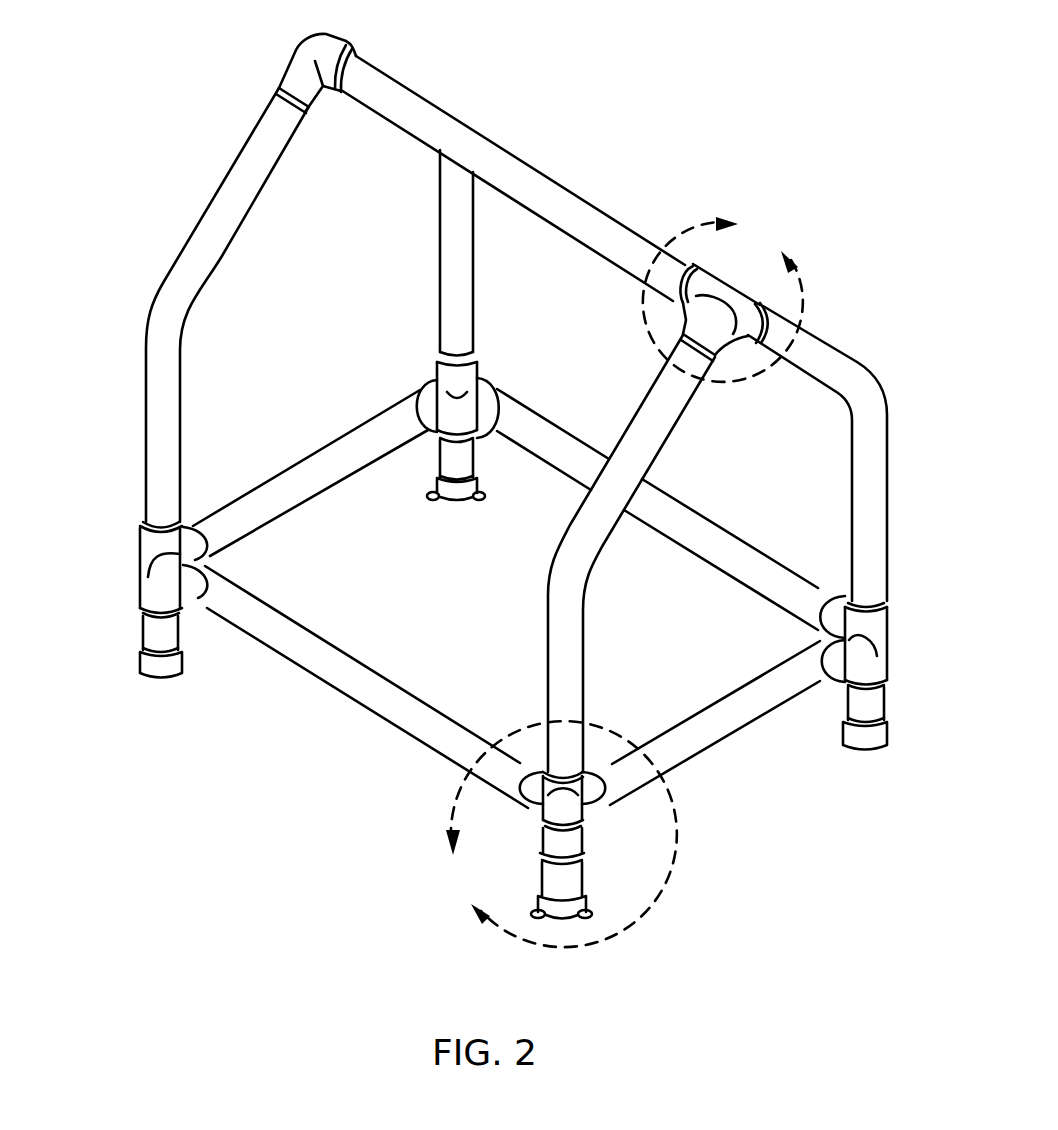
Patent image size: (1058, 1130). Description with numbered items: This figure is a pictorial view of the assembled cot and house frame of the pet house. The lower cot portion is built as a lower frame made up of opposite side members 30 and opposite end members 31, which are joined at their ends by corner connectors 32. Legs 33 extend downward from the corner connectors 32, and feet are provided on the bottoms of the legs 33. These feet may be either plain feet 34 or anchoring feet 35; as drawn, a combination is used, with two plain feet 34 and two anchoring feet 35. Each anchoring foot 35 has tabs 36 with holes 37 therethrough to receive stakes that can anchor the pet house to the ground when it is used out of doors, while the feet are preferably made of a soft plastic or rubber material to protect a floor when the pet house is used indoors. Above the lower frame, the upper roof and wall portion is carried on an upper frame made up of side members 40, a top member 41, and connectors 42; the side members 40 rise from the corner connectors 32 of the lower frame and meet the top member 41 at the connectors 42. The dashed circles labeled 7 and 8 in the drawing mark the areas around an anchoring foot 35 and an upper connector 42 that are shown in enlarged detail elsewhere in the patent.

The side members 30 is at (543, 447).
The end members 31 is at (320, 452).
The corner connectors 32 is at (440, 368).
The legs 33 is at (440, 458).
The plain feet 34 is at (153, 670).
The anchoring feet 35 is at (454, 498).
The tabs 36 is at (440, 498).
The holes 37 is at (436, 494).
The side members 40 is at (217, 253).
The top member 41 is at (571, 197).
The connectors 42 is at (337, 50).
The detail view circle for FIG. 7 is at (561, 834).
The detail view circle for FIG. 8 is at (723, 299).